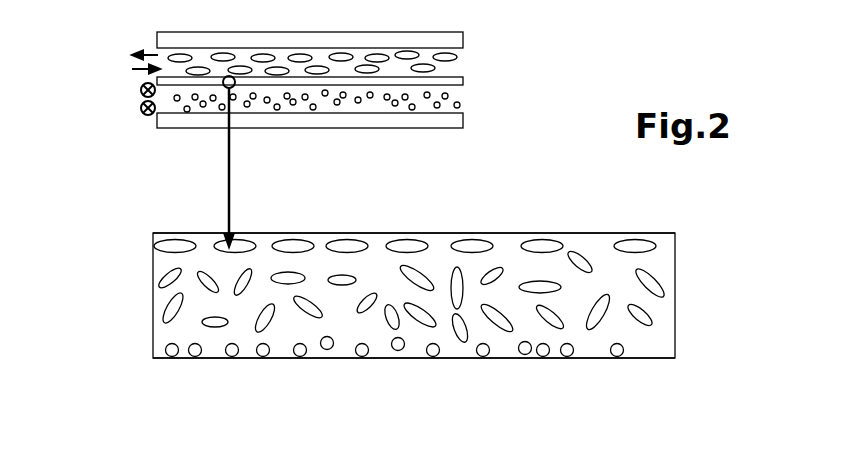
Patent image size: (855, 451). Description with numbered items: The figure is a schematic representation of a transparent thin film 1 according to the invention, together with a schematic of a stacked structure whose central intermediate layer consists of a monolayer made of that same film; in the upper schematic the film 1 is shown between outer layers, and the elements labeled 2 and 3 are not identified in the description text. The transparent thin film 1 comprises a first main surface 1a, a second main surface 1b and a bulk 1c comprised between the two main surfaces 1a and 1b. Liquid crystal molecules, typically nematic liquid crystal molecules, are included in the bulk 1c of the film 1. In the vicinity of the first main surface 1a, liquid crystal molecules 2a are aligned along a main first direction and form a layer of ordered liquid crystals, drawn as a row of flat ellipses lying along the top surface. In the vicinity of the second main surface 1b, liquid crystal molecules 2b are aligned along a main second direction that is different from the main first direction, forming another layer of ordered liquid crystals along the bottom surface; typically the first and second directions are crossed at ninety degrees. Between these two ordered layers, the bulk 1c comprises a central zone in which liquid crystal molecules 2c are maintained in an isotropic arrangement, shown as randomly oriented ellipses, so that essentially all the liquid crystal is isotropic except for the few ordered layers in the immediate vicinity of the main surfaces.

The transparent thin film 1 is at (470, 80).
The flat (plate-like) particles 2 is at (472, 63).
The spherical particles 3 is at (470, 97).
The first main surface 1a is at (267, 234).
The second main surface 1b is at (217, 359).
The bulk 1c is at (137, 235).
The liquid crystal molecules aligned along a main first direction 2a is at (482, 244).
The liquid crystal molecules aligned along a main second direction 2b is at (617, 356).
The liquid crystal molecules in isotropic arrangement 2c is at (585, 265).